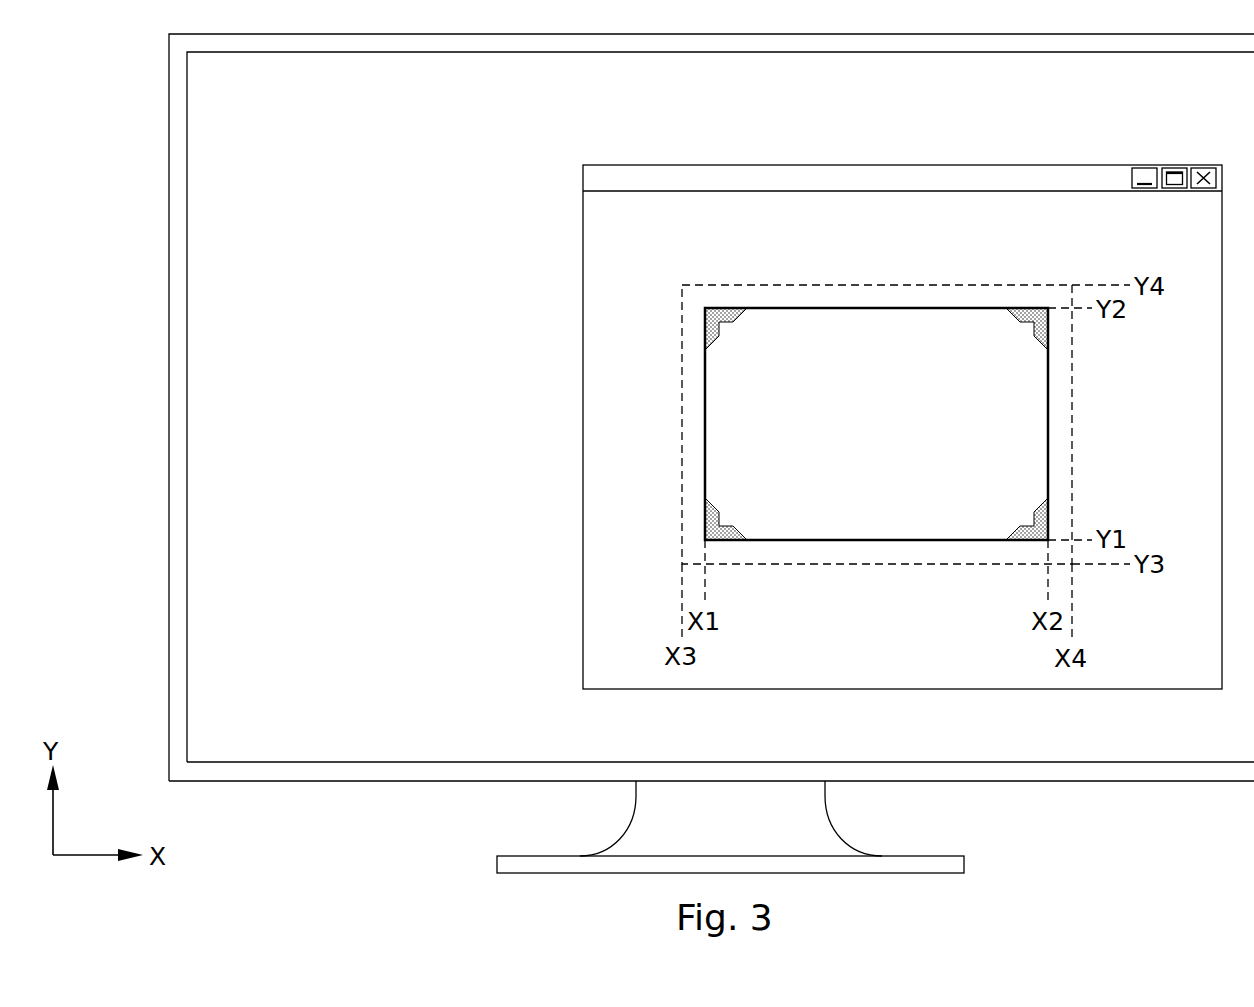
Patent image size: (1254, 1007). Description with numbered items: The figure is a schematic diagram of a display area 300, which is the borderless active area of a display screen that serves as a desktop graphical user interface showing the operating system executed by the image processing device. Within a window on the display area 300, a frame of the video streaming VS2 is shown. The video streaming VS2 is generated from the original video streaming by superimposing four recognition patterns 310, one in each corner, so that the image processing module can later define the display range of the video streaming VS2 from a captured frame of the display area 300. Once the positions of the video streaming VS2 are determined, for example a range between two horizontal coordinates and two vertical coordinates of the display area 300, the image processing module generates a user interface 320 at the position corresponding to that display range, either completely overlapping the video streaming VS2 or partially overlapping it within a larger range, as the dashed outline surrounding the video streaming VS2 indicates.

The display area 300 is at (278, 119).
The recognition patterns 310 is at (706, 321).
The user interface 320 is at (757, 285).
The video streaming VS2 is at (905, 517).